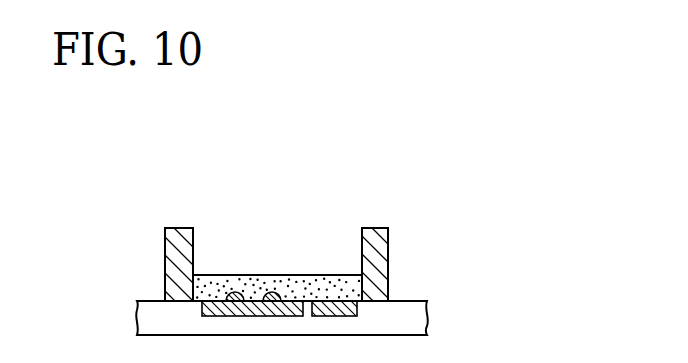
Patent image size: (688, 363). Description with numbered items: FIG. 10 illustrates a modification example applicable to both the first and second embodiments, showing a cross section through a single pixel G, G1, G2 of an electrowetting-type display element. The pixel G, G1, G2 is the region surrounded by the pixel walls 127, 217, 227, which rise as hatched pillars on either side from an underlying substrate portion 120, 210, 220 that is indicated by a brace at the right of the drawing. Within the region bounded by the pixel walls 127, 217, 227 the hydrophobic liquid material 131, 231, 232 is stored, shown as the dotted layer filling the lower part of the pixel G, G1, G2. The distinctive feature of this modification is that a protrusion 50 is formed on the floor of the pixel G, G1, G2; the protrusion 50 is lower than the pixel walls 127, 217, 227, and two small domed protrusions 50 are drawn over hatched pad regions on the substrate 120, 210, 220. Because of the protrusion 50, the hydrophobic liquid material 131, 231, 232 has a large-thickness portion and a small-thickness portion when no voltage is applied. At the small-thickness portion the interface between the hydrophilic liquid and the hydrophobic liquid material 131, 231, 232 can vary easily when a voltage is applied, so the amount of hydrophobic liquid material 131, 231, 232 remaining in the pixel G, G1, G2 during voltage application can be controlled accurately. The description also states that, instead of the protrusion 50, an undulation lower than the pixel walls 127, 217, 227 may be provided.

The substrate 120 is at (369, 317).
The substrate 210 is at (369, 317).
The substrate 220 is at (437, 300).
The pixel wall 127 is at (379, 246).
The pixel wall 217 is at (379, 246).
The pixel wall 227 is at (378, 249).
The hydrophobic liquid material 131 is at (257, 218).
The hydrophobic liquid material 231 is at (257, 218).
The hydrophobic liquid material 232 is at (217, 283).
The protrusion 50 is at (273, 291).
The pixel G is at (396, 178).
The pixel G1 is at (396, 178).
The pixel G2 is at (333, 220).